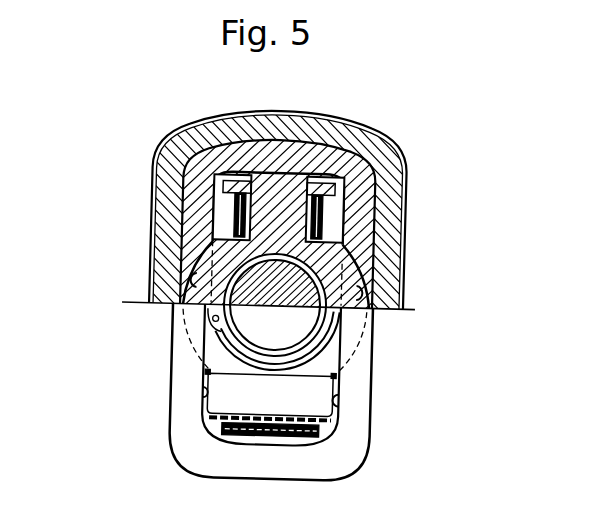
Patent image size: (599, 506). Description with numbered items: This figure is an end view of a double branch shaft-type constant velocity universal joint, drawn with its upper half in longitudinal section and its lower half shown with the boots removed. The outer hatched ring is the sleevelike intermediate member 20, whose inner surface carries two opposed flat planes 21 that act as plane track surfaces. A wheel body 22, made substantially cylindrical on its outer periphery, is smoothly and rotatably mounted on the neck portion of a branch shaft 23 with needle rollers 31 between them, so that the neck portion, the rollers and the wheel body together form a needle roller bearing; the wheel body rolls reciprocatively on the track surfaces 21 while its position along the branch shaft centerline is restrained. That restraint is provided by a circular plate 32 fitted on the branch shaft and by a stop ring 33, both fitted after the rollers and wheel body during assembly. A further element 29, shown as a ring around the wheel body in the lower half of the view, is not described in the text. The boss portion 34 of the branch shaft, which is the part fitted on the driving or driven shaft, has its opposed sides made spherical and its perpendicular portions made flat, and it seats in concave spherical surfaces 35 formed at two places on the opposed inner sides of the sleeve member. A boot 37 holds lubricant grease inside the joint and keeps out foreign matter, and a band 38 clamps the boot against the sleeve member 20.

The sleeve member 20 is at (363, 355).
The opposed inner surfaces 21 is at (338, 211).
The wheel body 22 is at (213, 198).
The branch shaft 23 is at (277, 195).
The ring 29 is at (223, 337).
The needle rollers 31 is at (234, 226).
The circular plate 32 is at (160, 150).
The stop ring 33 is at (232, 182).
The boss portion 34 is at (357, 260).
The concave spherical surface 35 is at (360, 290).
The boot 37 is at (340, 140).
The band 38 is at (185, 129).